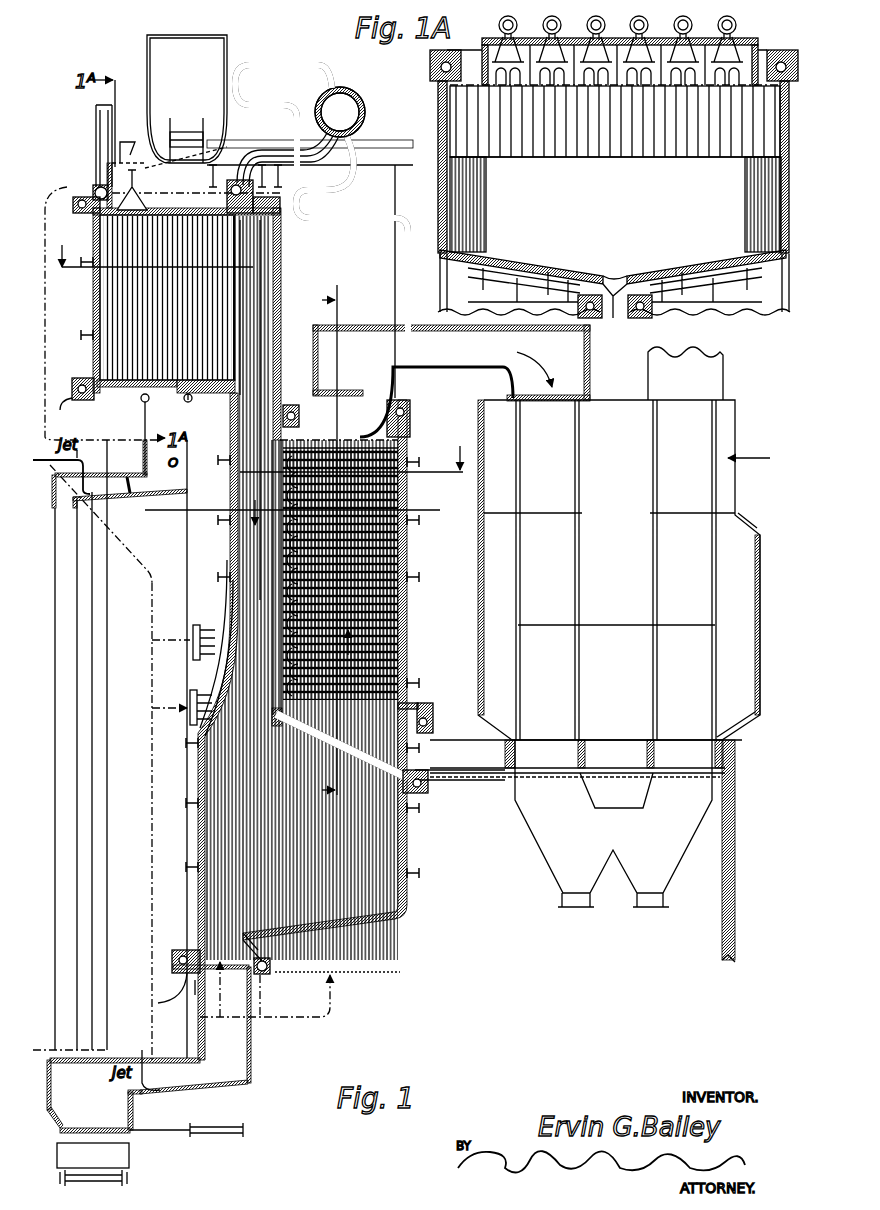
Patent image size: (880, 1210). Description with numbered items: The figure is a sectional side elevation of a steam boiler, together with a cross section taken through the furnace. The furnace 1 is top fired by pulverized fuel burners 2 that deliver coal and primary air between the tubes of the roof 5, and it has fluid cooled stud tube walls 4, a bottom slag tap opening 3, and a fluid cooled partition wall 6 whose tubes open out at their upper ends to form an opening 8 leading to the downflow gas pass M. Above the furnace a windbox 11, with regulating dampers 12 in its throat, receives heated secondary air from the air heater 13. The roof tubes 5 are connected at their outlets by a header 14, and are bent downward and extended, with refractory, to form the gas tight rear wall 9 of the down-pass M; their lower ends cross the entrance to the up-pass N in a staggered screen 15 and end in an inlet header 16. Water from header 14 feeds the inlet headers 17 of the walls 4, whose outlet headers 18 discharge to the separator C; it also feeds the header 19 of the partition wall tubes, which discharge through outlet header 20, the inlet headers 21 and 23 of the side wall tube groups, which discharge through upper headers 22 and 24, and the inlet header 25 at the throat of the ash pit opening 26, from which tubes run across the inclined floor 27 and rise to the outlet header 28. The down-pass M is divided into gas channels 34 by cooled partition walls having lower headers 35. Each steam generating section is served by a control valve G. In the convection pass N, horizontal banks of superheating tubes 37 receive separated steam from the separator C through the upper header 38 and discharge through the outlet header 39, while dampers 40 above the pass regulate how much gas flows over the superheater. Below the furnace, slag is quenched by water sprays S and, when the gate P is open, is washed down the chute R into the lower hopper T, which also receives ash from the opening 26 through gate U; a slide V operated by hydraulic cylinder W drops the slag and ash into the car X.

In FIG. 1, the furnace 1 is at (167, 297).
In FIG. 1A, the pulverized fuel burners 2 is at (553, 19).
In FIG. 1, the pulverized fuel burners 2 is at (137, 203).
In FIG. 1A, the slag tap opening 3 is at (614, 280).
In FIG. 1, the slag tap opening 3 is at (168, 385).
In FIG. 1, the furnace walls 4 is at (93, 298).
In FIG. 1A, the roof tubes 5 is at (640, 88).
In FIG. 1, the roof tubes 5 is at (167, 298).
In FIG. 1A, the partition wall 6 is at (567, 158).
In FIG. 1, the partition wall 6 is at (235, 318).
In FIG. 1, the opening 8 is at (235, 243).
In FIG. 1, the rear wall of down-pass 9 is at (279, 338).
In FIG. 1, the windbox 11 is at (190, 88).
In FIG. 1, the regulating dampers 12 is at (183, 131).
In FIG. 1, the air heater 13 is at (592, 654).
In FIG. 1, the header 14 is at (97, 187).
In FIG. 1, the screen 15 is at (362, 758).
In FIG. 1, the inlet header 16 is at (430, 786).
In FIG. 1A, the inlet header 17 is at (578, 300).
In FIG. 1, the inlet header 17 is at (82, 384).
In FIG. 1A, the outlet header 18 is at (432, 62).
In FIG. 1, the outlet header 18 is at (74, 210).
In FIG. 1, the header 19 is at (180, 968).
In FIG. 1, the outlet header 20 is at (237, 183).
In FIG. 1, the inlet headers 21 is at (195, 995).
In FIG. 1, the upper headers 22 is at (312, 201).
In FIG. 1, the inlet header 23 is at (366, 975).
In FIG. 1, the header 24 is at (340, 445).
In FIG. 1, the inlet header 25 is at (266, 972).
In FIG. 1, the ash pit opening 26 is at (233, 989).
In FIG. 1, the inclined floor 27 is at (315, 930).
In FIG. 1, the outlet header 28 is at (410, 412).
In FIG. 1, the gas channels 34 is at (228, 618).
In FIG. 1, the lower headers 35 is at (193, 665).
In FIG. 1, the superheating tubes 37 is at (385, 545).
In FIG. 1, the upper header 38 is at (298, 418).
In FIG. 1, the outlet header 39 is at (433, 715).
In FIG. 1, the dampers 40 is at (348, 395).
In FIG. 1, the separator C is at (364, 100).
In FIG. 1, the control valve G is at (190, 402).
In FIG. 1, the downflow gas pass M is at (255, 502).
In FIG. 1, the up-pass N is at (350, 653).
In FIG. 1, the gate P is at (131, 495).
In FIG. 1, the chute R is at (55, 608).
In FIG. 1, the water sprays S is at (62, 460).
In FIG. 1, the lower hopper T is at (85, 1081).
In FIG. 1, the gate U is at (185, 1080).
In FIG. 1, the slide V is at (85, 1128).
In FIG. 1, the hydraulic cylinder W is at (222, 1127).
In FIG. 1, the car X is at (93, 1164).